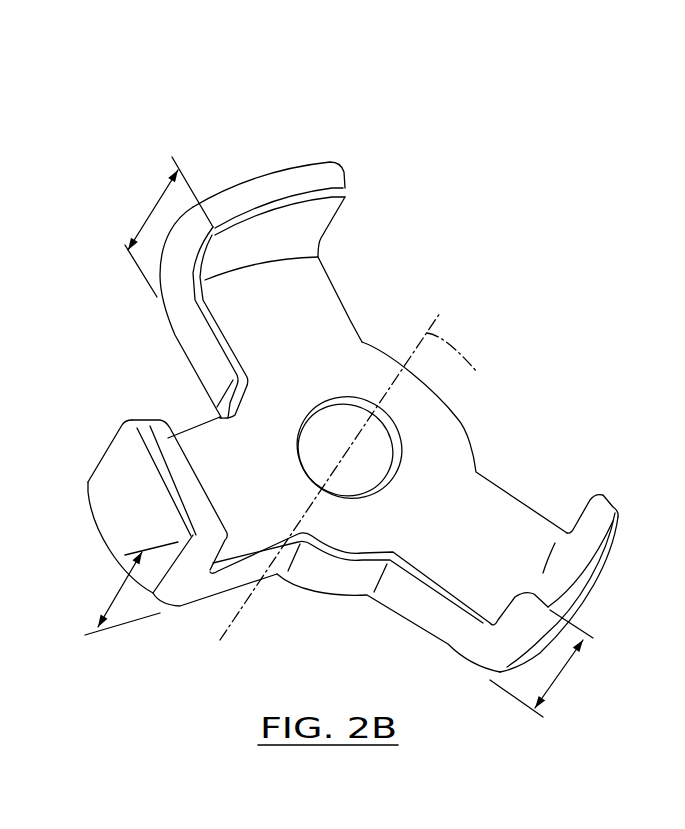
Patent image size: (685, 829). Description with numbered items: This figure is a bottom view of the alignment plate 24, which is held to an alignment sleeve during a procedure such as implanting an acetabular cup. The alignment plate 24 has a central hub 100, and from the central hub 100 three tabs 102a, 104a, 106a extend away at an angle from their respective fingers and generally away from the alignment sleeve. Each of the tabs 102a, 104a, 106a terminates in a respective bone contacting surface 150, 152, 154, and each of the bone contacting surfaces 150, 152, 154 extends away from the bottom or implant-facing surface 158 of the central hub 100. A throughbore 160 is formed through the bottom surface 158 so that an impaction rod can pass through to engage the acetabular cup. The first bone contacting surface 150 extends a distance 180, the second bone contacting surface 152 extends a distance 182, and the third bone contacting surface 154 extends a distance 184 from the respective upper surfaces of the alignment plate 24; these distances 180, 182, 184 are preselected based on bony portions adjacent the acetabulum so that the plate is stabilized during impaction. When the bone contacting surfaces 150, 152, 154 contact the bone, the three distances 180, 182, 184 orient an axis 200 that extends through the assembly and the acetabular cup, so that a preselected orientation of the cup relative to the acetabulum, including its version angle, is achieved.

The alignment plate 24 is at (512, 267).
The central hub 100 is at (320, 577).
The tab 102a is at (100, 460).
The tab 104a is at (603, 498).
The tab 106a is at (345, 176).
The first bone contacting surface 150 is at (157, 443).
The second bone contacting surface 152 is at (583, 550).
The third bone contacting surface 154 is at (290, 175).
The bottom surface 158 is at (343, 538).
The throughbore 160 is at (348, 424).
The distance 180 is at (93, 633).
The distance 182 is at (535, 710).
The distance 184 is at (128, 253).
The axis 200 is at (371, 476).